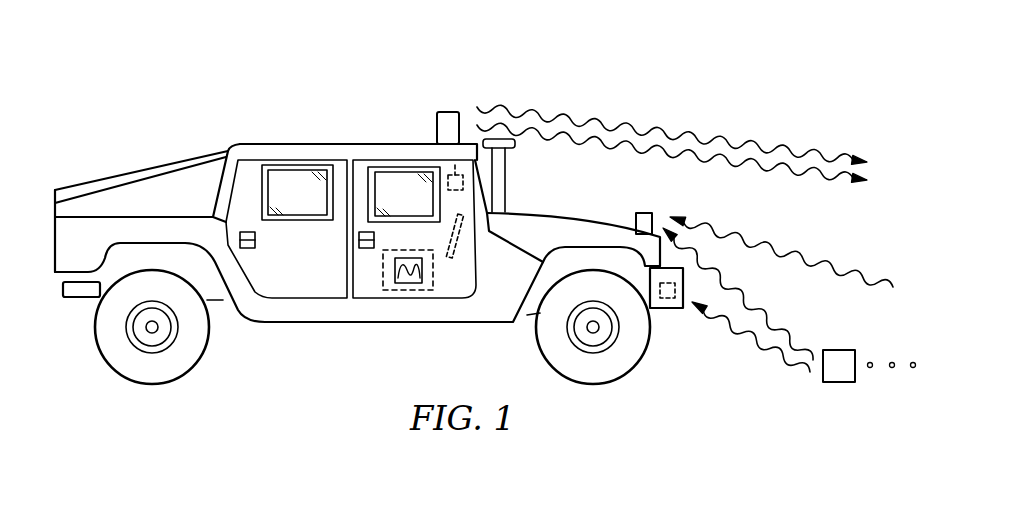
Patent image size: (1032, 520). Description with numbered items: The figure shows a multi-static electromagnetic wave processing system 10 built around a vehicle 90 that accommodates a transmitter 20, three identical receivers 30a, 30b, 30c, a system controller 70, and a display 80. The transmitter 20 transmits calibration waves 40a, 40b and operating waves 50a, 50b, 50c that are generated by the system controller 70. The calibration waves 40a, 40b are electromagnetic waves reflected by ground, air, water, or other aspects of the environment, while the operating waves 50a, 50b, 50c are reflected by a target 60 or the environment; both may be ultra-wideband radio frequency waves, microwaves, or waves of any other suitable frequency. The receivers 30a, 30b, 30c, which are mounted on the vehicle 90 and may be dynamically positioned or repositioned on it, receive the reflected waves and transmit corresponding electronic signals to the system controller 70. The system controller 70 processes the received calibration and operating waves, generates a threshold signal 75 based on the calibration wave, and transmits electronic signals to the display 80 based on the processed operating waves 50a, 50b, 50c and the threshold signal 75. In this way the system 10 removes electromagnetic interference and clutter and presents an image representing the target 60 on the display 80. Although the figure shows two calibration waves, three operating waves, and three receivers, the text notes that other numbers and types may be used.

The system 10 is at (698, 81).
The transmitter 20 is at (445, 112).
The receiver 30a is at (447, 180).
The receiver 30b is at (647, 213).
The receiver 30c is at (673, 300).
The calibration wave 40a is at (608, 122).
The calibration wave 40b is at (817, 257).
The operating wave 50a is at (595, 143).
The operating wave 50b is at (757, 318).
The operating wave 50c is at (772, 353).
The target 60 is at (838, 350).
The system controller 70 is at (383, 277).
The threshold signal 75 is at (410, 283).
The display 80 is at (457, 250).
The vehicle 90 is at (292, 144).